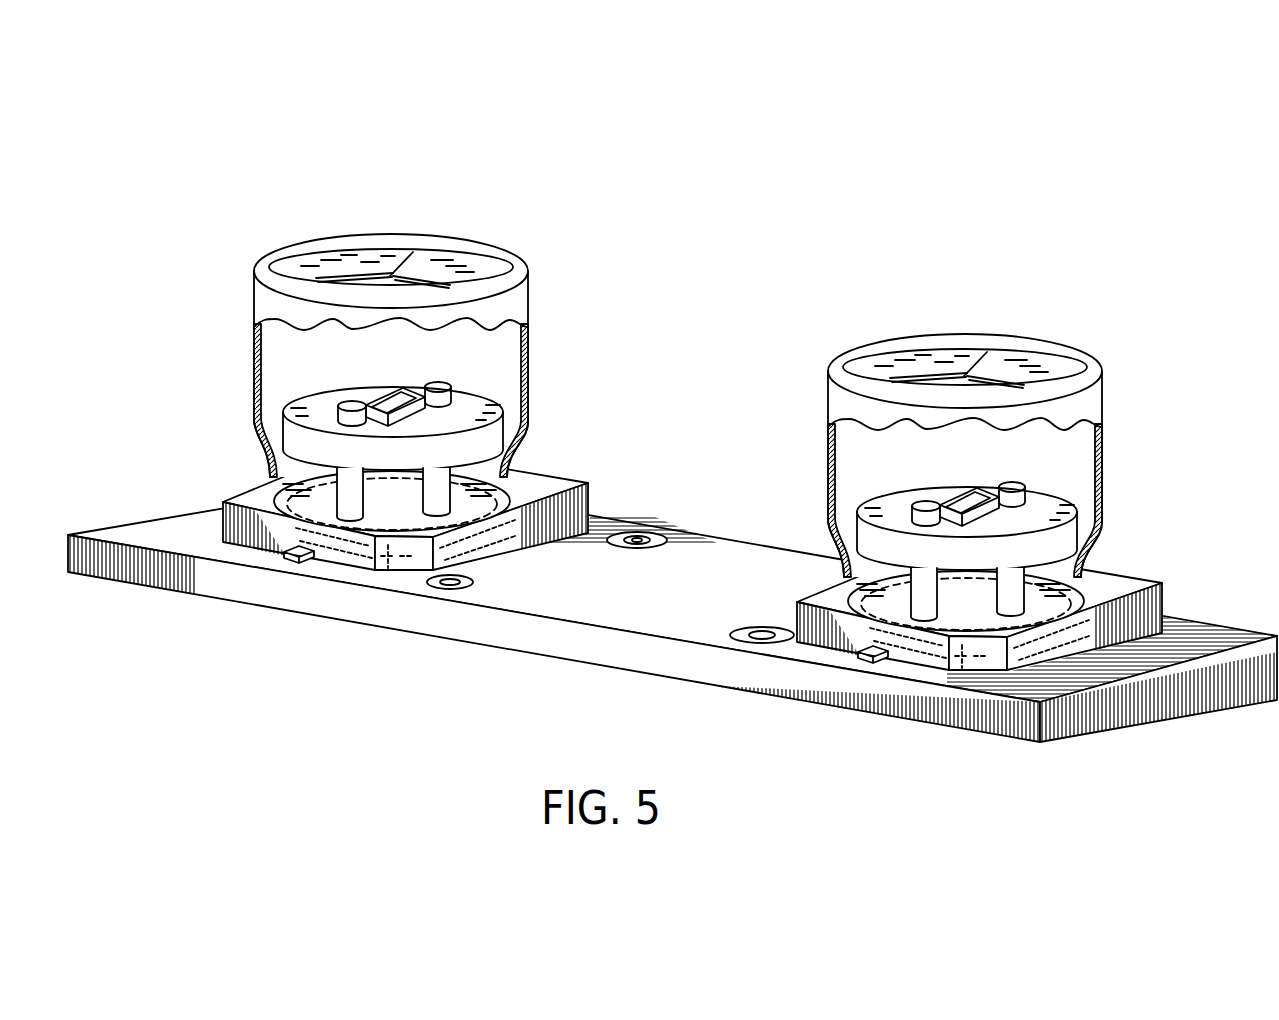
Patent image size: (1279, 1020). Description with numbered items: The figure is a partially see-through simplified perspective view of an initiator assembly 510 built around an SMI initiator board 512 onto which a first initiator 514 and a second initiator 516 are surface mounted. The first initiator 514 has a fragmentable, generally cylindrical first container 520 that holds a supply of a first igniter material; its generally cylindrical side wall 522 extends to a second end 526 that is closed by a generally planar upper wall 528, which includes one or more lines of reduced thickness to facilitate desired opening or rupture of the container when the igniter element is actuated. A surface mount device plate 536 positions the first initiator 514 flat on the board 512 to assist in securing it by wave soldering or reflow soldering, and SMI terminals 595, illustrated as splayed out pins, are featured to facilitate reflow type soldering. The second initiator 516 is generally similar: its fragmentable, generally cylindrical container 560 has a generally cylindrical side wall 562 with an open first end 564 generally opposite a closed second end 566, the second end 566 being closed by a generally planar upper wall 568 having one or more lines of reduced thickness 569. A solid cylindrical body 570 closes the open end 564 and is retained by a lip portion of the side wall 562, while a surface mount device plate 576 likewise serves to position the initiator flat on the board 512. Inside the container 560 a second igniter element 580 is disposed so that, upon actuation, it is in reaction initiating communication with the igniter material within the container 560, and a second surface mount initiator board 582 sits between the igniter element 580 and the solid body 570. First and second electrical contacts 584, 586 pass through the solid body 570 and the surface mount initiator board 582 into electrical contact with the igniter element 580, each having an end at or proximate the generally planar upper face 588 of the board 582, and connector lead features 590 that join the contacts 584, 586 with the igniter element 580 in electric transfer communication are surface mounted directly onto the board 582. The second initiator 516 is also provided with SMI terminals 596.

The initiator assembly 510 is at (672, 429).
The SMI initiator board 512 is at (447, 672).
The first initiator 514 is at (1041, 383).
The second initiator 516 is at (389, 360).
The first container 520 is at (1170, 369).
The side wall 522 is at (1105, 460).
The second end 526 is at (1035, 360).
The upper wall 528 is at (927, 360).
The surface mount device (SMD) plate 536 is at (1163, 592).
The container 560 is at (463, 247).
The side wall 562 is at (483, 314).
The open first end 564 is at (373, 580).
The closed second end 566 is at (497, 258).
The upper wall 568 is at (350, 262).
The lines of reduced thickness 569 is at (320, 262).
The solid cylindrical body 570 is at (278, 493).
The surface mount device (SMD) plate 576 is at (590, 483).
The second igniter element 580 is at (391, 402).
The second surface mount initiator board 582 is at (303, 413).
The first electrical contact 584 is at (445, 392).
The second electrical contact 586 is at (338, 421).
The upper face 588 is at (465, 416).
The connector lead features 590 is at (290, 441).
The SMI terminals 595 is at (861, 655).
The SMI terminals 596 is at (285, 558).